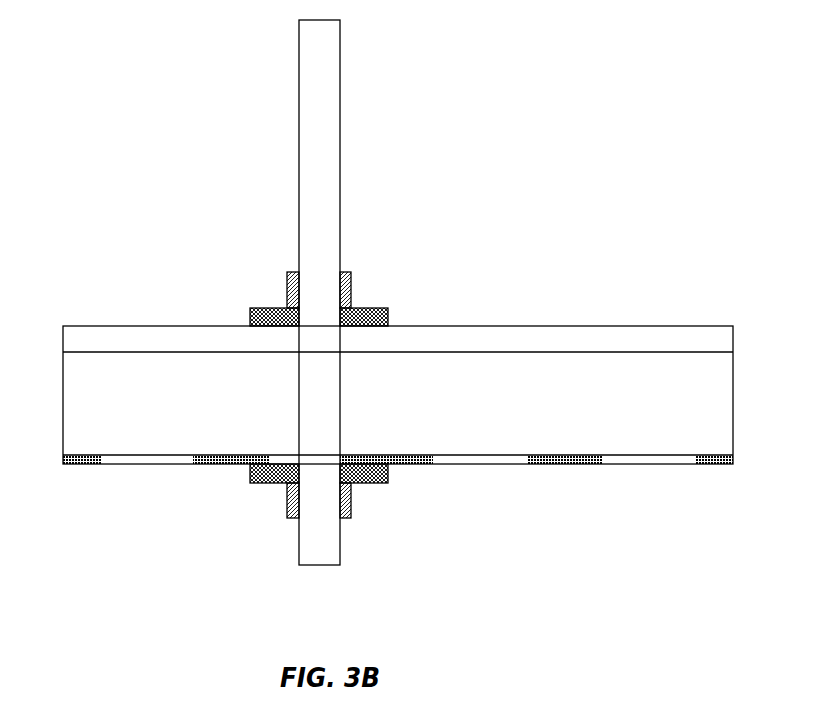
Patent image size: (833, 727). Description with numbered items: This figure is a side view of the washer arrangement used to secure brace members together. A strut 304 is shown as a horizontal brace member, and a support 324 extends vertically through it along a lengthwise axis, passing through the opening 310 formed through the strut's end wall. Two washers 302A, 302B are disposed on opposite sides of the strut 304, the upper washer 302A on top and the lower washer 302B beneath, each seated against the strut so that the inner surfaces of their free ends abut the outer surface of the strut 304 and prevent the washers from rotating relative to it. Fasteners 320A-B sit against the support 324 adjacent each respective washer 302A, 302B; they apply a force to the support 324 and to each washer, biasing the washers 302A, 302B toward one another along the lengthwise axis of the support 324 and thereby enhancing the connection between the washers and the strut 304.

The strut 304 is at (718, 340).
The opening 310 is at (398, 494).
The support 324 is at (396, 292).
The washer 302A is at (375, 308).
The washer 302B is at (376, 476).
The fasteners 320A-B is at (287, 495).